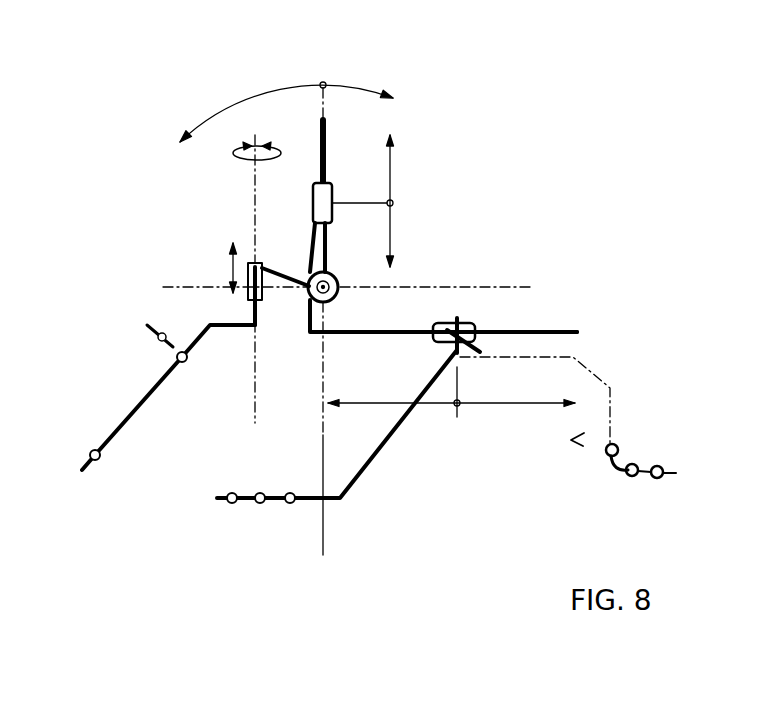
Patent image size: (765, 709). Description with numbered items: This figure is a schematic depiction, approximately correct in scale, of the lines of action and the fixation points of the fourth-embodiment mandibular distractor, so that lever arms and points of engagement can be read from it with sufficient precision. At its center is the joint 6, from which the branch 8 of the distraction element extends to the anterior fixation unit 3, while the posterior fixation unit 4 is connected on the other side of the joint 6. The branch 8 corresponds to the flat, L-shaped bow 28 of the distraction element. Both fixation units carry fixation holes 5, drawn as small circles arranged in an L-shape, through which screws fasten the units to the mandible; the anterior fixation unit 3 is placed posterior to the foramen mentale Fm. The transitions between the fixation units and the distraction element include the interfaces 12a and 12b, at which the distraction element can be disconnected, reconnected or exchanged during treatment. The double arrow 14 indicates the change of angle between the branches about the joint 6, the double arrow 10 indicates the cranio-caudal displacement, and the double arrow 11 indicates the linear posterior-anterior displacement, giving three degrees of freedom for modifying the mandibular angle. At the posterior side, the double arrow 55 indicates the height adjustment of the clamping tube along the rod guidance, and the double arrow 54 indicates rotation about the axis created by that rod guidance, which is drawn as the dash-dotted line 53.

The anterior fixation unit 3 is at (388, 440).
The posterior fixation unit 4 is at (126, 398).
The fixation holes 5 is at (160, 333).
The joint 6 is at (308, 282).
The branch 8 is at (380, 332).
The double arrow 10 is at (392, 172).
The double arrow 11 is at (494, 408).
The interface 12a is at (214, 265).
The interface 12b is at (443, 343).
The double arrow 14 is at (249, 95).
The L-shaped bow 28 is at (537, 332).
The axis 53 is at (253, 210).
The double arrow 54 is at (230, 155).
The double arrow 55 is at (230, 262).
The foramen mentale Fm is at (573, 447).